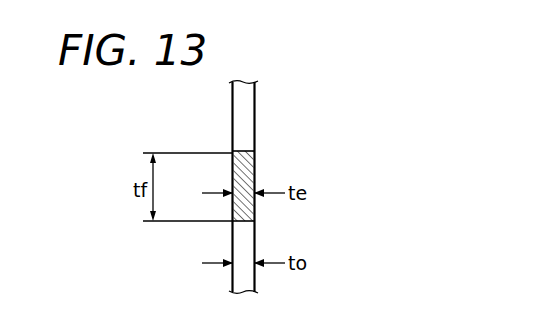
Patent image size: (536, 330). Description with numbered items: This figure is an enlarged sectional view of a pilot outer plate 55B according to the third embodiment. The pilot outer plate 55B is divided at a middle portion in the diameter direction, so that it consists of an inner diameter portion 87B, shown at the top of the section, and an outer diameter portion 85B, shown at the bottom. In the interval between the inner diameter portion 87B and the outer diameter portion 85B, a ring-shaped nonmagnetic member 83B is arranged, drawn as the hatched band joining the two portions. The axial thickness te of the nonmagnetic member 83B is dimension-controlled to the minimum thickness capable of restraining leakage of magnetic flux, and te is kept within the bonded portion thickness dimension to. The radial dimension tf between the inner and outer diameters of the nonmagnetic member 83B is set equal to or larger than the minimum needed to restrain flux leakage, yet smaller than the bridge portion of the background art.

The pilot outer plate 55B is at (256, 138).
The inner diameter portion 87B is at (255, 101).
The nonmagnetic member 83B is at (255, 168).
The outer diameter portion 85B is at (255, 279).